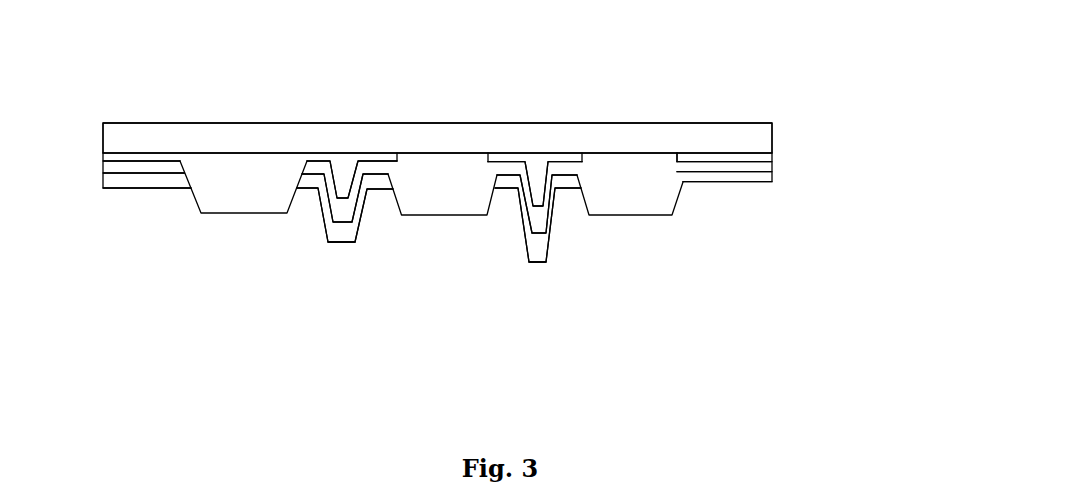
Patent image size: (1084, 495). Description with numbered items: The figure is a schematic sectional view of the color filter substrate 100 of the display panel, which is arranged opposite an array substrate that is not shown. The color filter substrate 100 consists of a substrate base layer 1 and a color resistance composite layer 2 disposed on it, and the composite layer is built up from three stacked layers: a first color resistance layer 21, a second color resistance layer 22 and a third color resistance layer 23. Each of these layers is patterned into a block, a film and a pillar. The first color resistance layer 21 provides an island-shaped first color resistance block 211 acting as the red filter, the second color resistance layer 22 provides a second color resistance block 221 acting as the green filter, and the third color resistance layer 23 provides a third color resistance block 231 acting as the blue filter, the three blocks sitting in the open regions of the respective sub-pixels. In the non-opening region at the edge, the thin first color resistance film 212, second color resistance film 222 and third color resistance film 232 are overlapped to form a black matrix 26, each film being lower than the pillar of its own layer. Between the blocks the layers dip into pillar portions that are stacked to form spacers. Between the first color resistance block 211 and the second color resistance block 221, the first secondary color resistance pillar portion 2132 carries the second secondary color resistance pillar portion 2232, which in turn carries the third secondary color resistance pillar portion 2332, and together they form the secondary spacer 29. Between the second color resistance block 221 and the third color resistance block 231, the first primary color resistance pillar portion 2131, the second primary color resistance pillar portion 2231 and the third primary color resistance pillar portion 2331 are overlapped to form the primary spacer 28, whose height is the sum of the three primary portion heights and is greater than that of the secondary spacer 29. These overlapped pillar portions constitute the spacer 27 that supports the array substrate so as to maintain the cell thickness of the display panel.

The color filter substrate 100 is at (493, 93).
The substrate base layer 1 is at (743, 143).
The color resistance composite layer 2 is at (868, 125).
The first color resistance layer 21 is at (772, 155).
The second color resistance layer 22 is at (772, 164).
The third color resistance layer 23 is at (772, 175).
The first color resistance block 211 is at (218, 188).
The second color resistance block 221 is at (420, 183).
The third color resistance block 231 is at (605, 183).
The first color resistance film 212 is at (111, 157).
The second color resistance film 222 is at (130, 168).
The third color resistance film 232 is at (157, 181).
The black matrix 26 is at (115, 273).
The first secondary color resistance pillar portion 2132 is at (338, 188).
The second secondary color resistance pillar portion 2232 is at (348, 208).
The third secondary color resistance pillar portion 2332 is at (343, 231).
The secondary spacer 29 is at (295, 333).
The first primary color resistance pillar portion 2131 is at (533, 186).
The second primary color resistance pillar portion 2231 is at (537, 213).
The third primary color resistance pillar portion 2331 is at (537, 243).
The primary spacer 28 is at (507, 322).
The spacer 27 is at (542, 365).